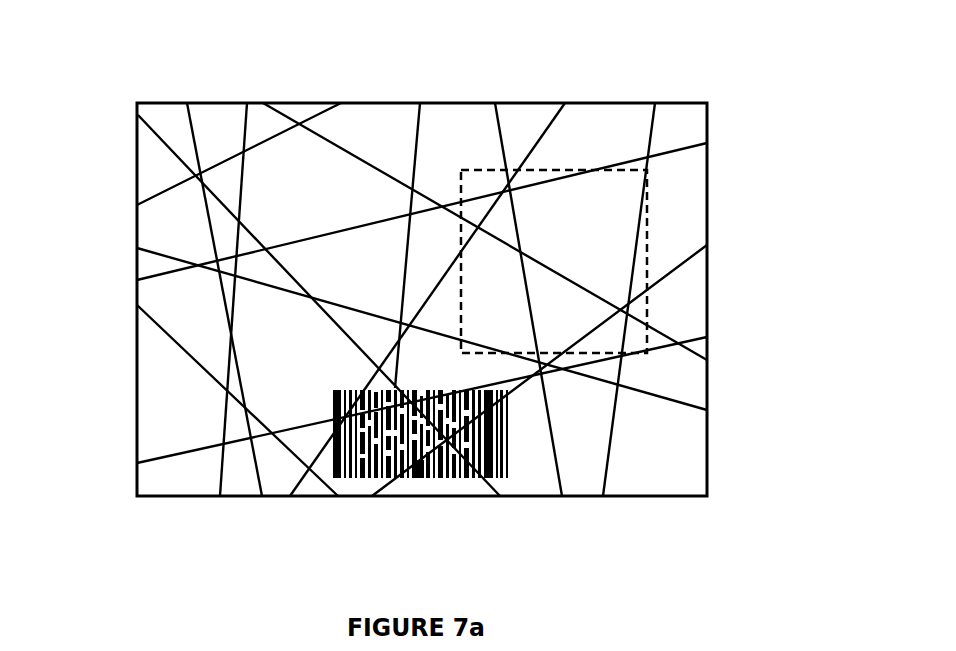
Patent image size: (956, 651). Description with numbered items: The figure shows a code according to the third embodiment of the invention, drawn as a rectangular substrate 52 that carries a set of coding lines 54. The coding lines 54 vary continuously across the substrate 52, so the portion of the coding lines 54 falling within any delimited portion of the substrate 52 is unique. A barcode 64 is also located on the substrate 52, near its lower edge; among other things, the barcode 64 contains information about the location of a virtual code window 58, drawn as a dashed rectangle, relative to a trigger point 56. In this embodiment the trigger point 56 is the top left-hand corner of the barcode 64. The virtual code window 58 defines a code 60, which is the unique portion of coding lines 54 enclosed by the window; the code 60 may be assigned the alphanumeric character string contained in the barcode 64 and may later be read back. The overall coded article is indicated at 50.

The security label 50 is at (766, 332).
The substrate 52 is at (173, 230).
The coding lines 54 is at (608, 386).
The trigger point 56 is at (333, 389).
The virtual code window 58 is at (647, 210).
The code 60 is at (545, 205).
The barcode 64 is at (418, 465).